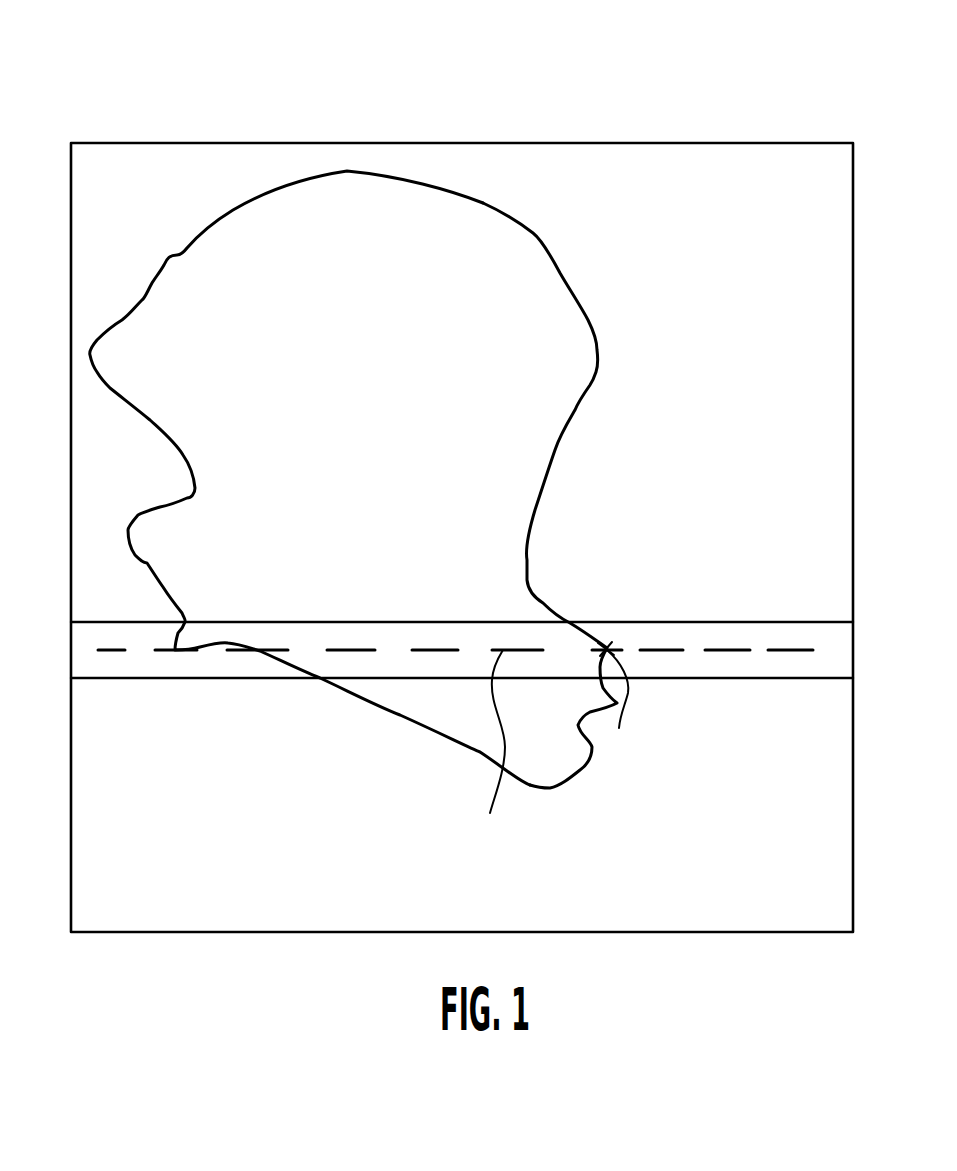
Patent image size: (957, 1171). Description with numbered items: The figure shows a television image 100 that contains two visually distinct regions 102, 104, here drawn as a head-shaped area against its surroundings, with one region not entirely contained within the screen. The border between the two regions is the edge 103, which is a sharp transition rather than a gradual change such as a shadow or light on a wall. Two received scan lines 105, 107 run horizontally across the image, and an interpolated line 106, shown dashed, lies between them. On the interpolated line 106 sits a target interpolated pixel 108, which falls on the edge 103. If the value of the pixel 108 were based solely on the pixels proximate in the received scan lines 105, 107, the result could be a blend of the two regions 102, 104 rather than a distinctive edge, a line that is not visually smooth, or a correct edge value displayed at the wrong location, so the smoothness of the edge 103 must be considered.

The television image 100 is at (397, 143).
The visually distinct region 102 is at (578, 229).
The edge 103 is at (598, 350).
The visually distinct region 104 is at (722, 266).
The received scan line 105 is at (610, 622).
The interpolated line 106 is at (797, 649).
The received scan line 107 is at (777, 678).
The interpolated pixel 108 is at (605, 649).